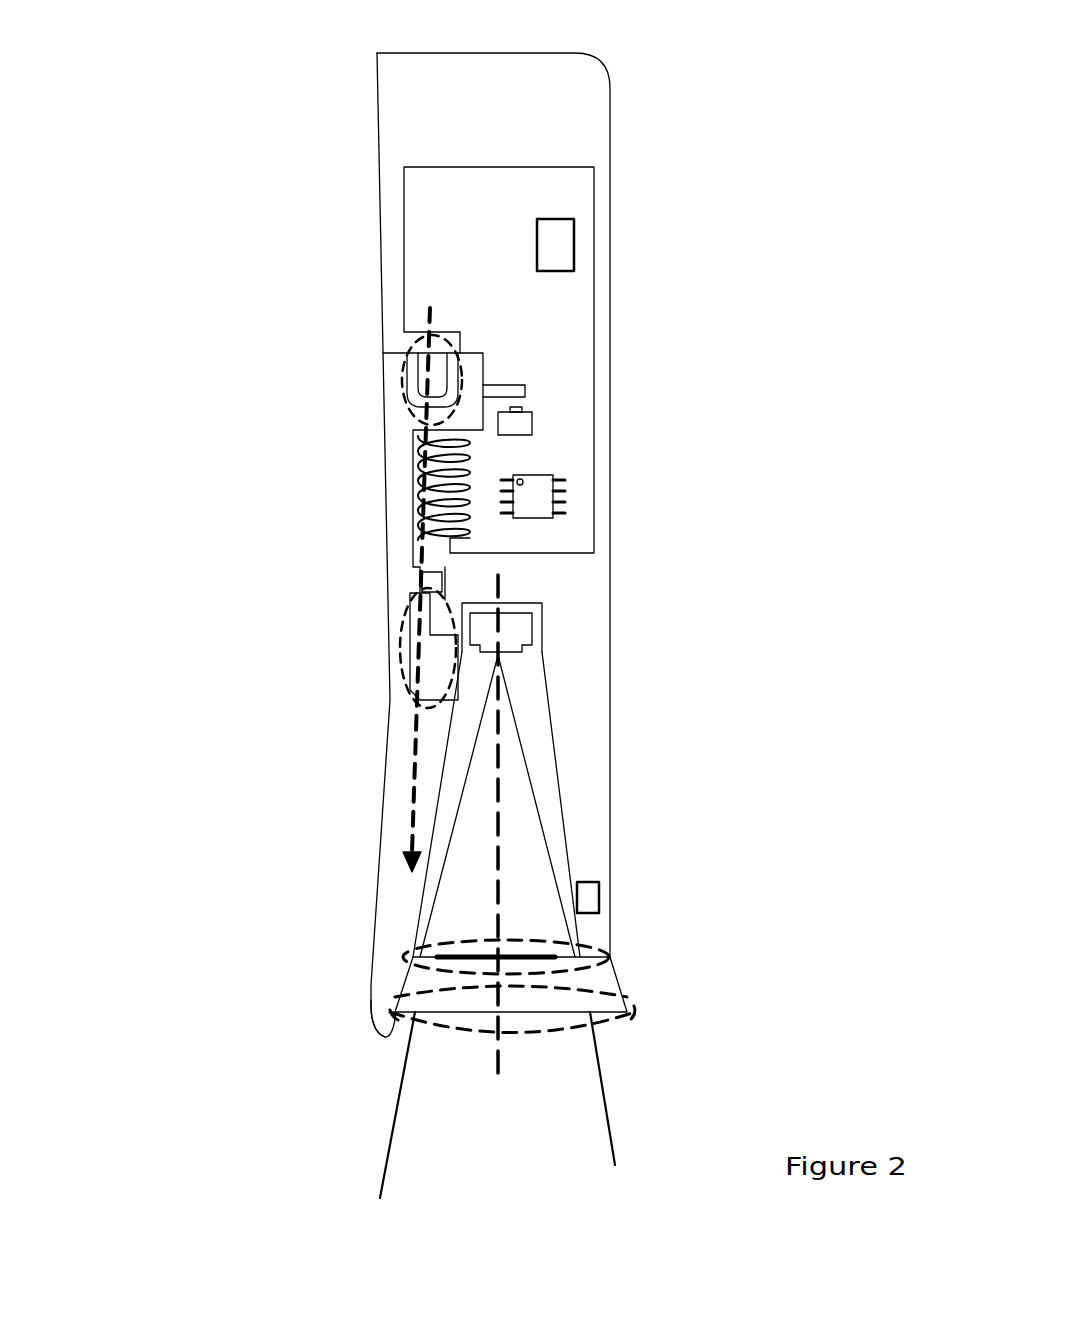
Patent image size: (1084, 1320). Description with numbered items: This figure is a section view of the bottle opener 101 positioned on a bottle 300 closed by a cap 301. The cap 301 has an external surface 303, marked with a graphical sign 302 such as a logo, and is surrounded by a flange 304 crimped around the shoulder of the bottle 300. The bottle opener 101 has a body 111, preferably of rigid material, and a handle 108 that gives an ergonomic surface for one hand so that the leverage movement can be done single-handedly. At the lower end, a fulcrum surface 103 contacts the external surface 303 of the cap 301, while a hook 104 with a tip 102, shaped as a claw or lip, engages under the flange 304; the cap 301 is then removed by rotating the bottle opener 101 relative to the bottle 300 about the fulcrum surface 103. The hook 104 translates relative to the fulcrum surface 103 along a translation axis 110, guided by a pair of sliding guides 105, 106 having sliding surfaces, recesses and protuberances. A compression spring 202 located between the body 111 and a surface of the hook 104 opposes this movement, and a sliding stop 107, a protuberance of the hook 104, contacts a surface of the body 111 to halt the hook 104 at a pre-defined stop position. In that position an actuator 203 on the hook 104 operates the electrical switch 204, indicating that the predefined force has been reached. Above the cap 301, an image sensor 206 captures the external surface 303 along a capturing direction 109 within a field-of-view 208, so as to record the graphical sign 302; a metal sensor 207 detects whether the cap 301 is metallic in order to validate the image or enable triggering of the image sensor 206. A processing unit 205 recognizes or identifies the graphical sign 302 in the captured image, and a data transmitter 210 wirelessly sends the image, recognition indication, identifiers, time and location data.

The bottle opener 101 is at (197, 92).
The body of the bottle opener 111 is at (522, 145).
The data transmitter 210 is at (558, 248).
The actuator of the electrical switch 203 is at (508, 389).
The electrical switch 204 is at (523, 424).
The processing unit 205 is at (530, 499).
The handle 108 is at (632, 536).
The sliding guide 106 is at (403, 367).
The compression spring 202 is at (447, 498).
The sliding stop 107 is at (426, 578).
The sliding guide 105 is at (400, 648).
The hook 104 is at (393, 780).
The translation axis 110 is at (410, 843).
The image sensor 206 is at (522, 632).
The field-of-view of the image sensor 208 is at (507, 838).
The metal sensor 207 is at (588, 897).
The fulcrum surface 103 is at (606, 948).
The external surface of the cap 303 is at (627, 960).
The graphical sign 302 is at (437, 952).
The cap of the bottle 301 is at (650, 993).
The flange 304 is at (388, 1003).
The capturing direction of the camera 109 is at (498, 1055).
The tip of hook 102 is at (386, 1027).
The bottle 300 is at (572, 1159).